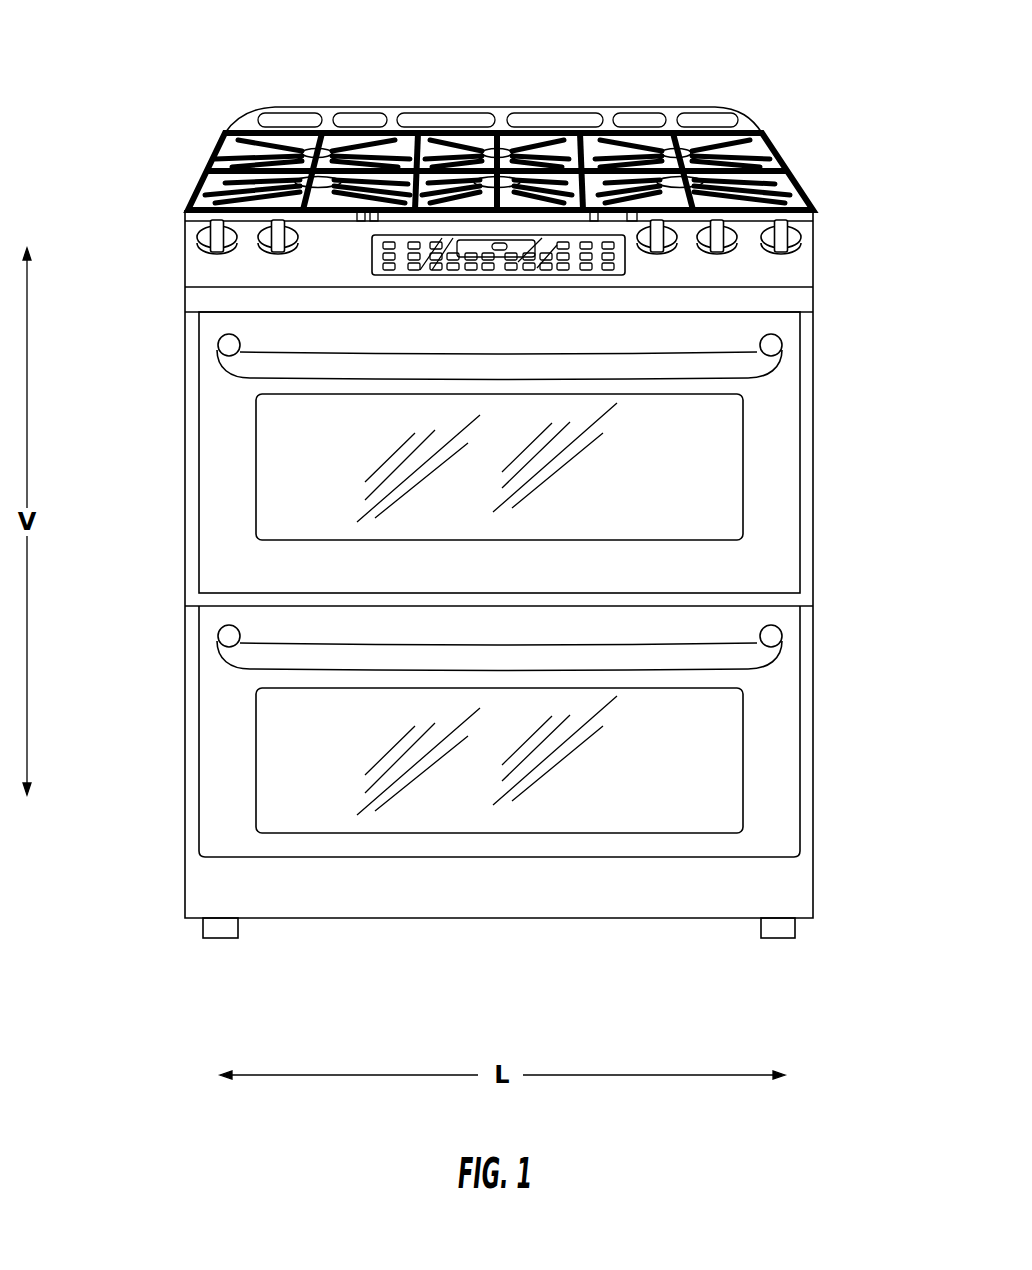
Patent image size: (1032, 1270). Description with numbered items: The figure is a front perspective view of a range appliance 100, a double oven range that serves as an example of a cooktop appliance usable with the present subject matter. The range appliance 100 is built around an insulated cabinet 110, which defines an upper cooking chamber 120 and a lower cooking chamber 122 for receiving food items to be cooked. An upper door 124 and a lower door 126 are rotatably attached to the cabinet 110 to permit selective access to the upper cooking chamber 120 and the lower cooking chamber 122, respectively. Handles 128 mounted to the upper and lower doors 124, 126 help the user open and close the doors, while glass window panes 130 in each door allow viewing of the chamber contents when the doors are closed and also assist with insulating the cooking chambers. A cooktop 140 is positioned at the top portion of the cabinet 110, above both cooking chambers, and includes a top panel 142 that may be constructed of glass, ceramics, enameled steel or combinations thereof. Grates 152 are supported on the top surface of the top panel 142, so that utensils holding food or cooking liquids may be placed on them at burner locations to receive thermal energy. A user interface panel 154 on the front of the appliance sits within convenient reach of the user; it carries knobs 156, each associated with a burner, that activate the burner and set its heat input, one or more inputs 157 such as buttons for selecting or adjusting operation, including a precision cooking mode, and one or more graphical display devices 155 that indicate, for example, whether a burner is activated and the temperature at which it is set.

The range appliance 100 is at (150, 117).
The cabinet 110 is at (677, 298).
The upper cooking chamber 120 is at (504, 465).
The lower cooking chamber 122 is at (495, 746).
The upper door 124 is at (190, 527).
The lower door 126 is at (190, 793).
The handles 128 is at (323, 365).
The glass window panes 130 is at (718, 516).
The cooktop 140 is at (770, 117).
The top panel 142 is at (810, 212).
The grates 152 is at (787, 157).
The user interface panel 154 is at (501, 234).
The graphical display devices 155 is at (468, 245).
The knobs 156 is at (268, 252).
The inputs 157 is at (453, 272).